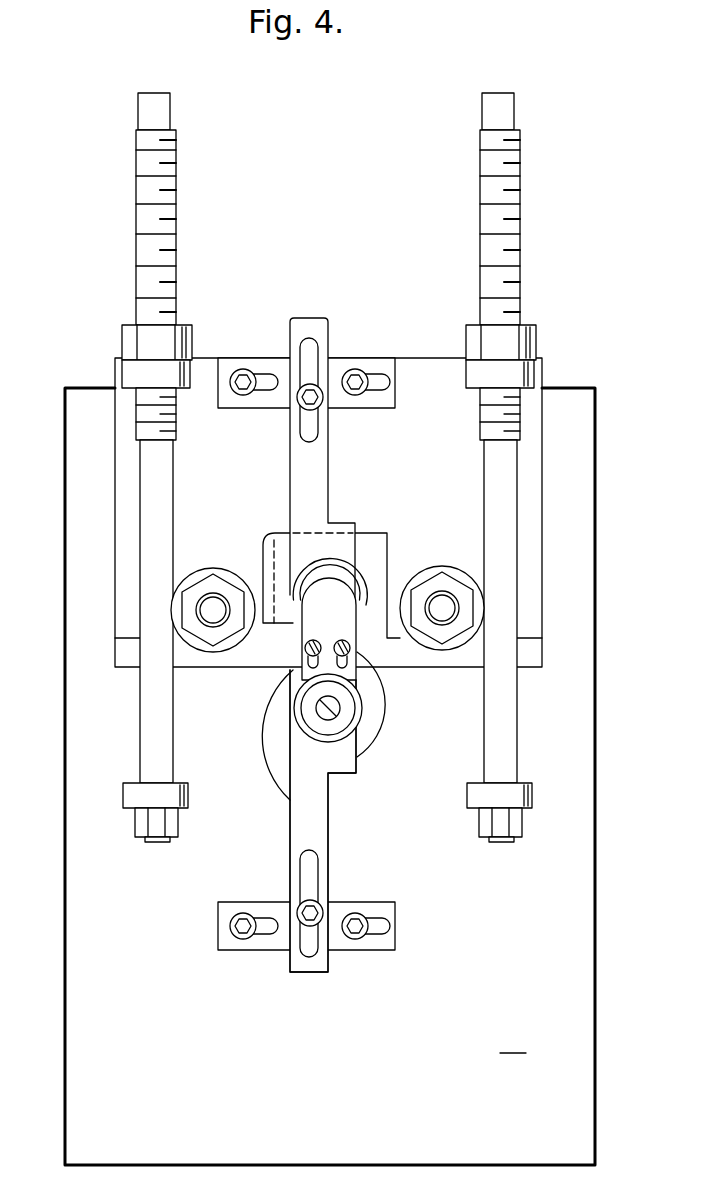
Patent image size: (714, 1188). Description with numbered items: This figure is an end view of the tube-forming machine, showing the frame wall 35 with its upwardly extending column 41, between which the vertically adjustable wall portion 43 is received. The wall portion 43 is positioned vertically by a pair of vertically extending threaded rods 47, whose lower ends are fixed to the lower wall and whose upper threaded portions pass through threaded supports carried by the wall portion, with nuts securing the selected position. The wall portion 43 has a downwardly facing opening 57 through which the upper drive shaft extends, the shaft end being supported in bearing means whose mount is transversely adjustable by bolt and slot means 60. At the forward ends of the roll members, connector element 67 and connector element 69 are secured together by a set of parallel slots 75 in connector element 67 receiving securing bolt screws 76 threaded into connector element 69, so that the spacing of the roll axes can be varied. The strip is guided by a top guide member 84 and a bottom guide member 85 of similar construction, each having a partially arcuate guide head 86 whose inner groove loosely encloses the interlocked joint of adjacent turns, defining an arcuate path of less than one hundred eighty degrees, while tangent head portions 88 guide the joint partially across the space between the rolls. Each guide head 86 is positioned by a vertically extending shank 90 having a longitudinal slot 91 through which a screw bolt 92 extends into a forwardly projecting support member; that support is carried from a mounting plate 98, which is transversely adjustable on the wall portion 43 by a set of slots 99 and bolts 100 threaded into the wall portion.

The frame wall 35 is at (514, 1041).
The column 41 is at (65, 488).
The vertically adjustable wall portion 43 is at (435, 382).
The threaded rods 47 is at (170, 130).
The downwardly facing opening 57 is at (383, 546).
The bolt and slot means 60 is at (205, 597).
The connector element 67 is at (349, 656).
The connector element 69 is at (343, 712).
The parallel slots 75 is at (305, 662).
The securing bolt screws 76 is at (308, 654).
The top guide member 84 is at (334, 492).
The bottom guide member 85 is at (338, 830).
The guide head 86 is at (351, 525).
The tangent head portions 88 is at (283, 572).
The shank 90 is at (291, 478).
The slot 91 is at (309, 433).
The screw bolt 92 is at (300, 394).
The mounting plate 98 is at (395, 405).
The slots 99 is at (380, 378).
The bolts 100 is at (353, 380).